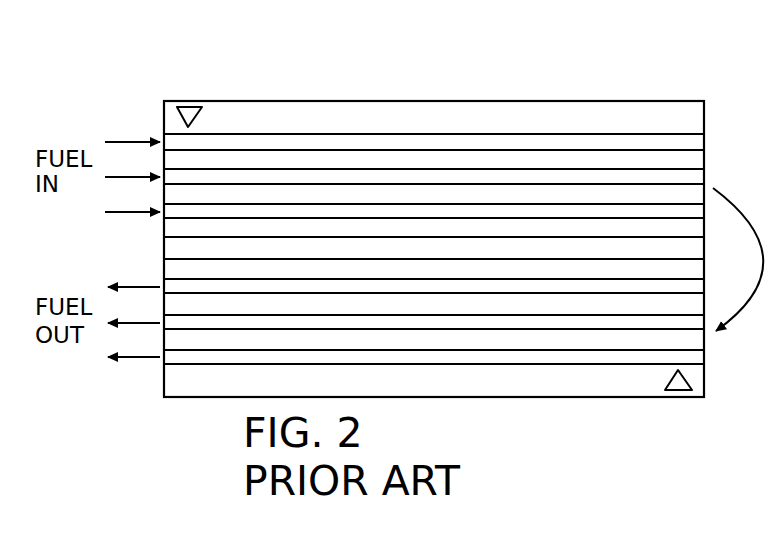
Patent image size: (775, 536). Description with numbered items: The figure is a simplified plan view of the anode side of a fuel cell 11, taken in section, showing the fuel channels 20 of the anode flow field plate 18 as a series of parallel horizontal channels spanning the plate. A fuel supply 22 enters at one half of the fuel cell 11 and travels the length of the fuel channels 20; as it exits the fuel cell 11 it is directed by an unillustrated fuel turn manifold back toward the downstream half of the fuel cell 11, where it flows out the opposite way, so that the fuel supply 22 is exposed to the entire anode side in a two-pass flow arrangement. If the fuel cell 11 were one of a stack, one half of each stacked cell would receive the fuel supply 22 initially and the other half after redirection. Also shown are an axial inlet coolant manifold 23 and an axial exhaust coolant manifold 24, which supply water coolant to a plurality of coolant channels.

The fuel cell 11 is at (126, 72).
The anode flow field plate 18 is at (612, 118).
The fuel channels 20 is at (398, 140).
The fuel supply 22 is at (133, 140).
The inlet coolant manifold 23 is at (188, 118).
The exhaust coolant manifold 24 is at (678, 380).